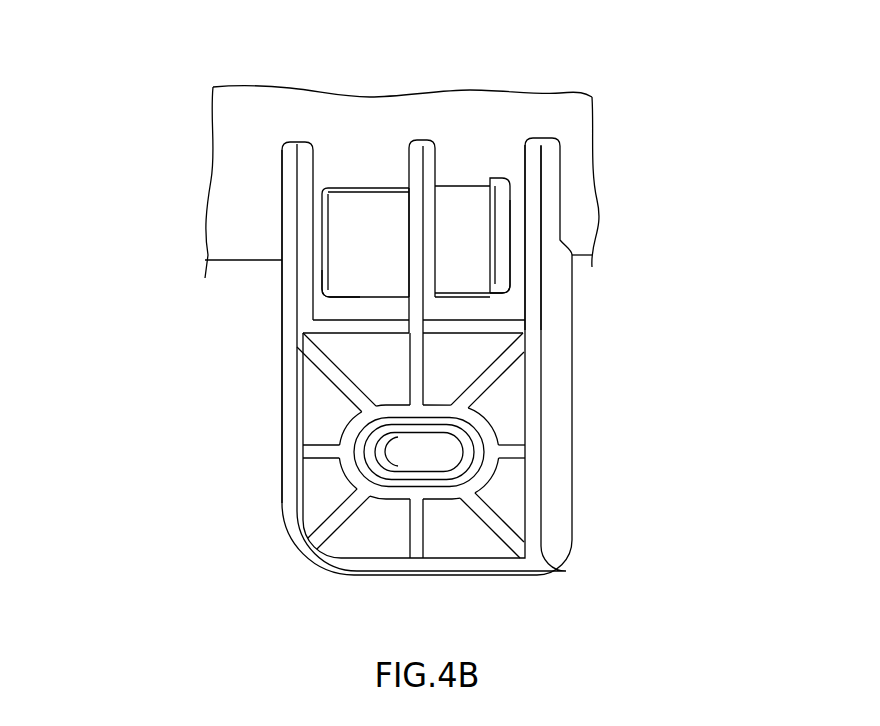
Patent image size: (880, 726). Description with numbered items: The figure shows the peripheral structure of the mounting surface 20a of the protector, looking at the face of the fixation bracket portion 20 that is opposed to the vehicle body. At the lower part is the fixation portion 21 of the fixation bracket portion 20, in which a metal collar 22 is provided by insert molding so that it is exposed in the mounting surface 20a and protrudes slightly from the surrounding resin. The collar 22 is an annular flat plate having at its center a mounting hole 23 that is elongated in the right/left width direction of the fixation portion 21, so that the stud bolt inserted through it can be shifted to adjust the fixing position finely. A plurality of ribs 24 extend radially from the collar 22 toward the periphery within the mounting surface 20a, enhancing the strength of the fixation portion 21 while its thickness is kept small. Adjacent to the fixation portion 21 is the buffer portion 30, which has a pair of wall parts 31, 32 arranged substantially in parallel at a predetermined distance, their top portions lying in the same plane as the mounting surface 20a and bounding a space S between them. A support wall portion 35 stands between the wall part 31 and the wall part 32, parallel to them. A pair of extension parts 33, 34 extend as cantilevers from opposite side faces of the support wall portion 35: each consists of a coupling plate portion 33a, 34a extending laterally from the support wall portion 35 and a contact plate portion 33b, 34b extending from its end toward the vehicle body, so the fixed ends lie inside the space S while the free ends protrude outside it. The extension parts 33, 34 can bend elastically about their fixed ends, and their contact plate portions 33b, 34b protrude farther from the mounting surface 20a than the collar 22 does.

The fixation bracket portion 20 is at (251, 371).
The mounting surface 20a is at (303, 336).
The fixation portion 21 is at (286, 478).
The collar 22 is at (460, 442).
The mounting hole 23 is at (421, 459).
The ribs 24 is at (312, 441).
The buffer portion 30 is at (196, 229).
The wall part 31 is at (289, 168).
The wall part 32 is at (542, 173).
The extension part 33 is at (358, 190).
The coupling plate portion 33a is at (380, 197).
The contact plate portion 33b is at (322, 268).
The extension part 34 is at (475, 197).
The coupling plate portion 34a is at (458, 197).
The contact plate portion 34b is at (497, 272).
The support wall portion 35 is at (433, 168).
The space S is at (510, 231).